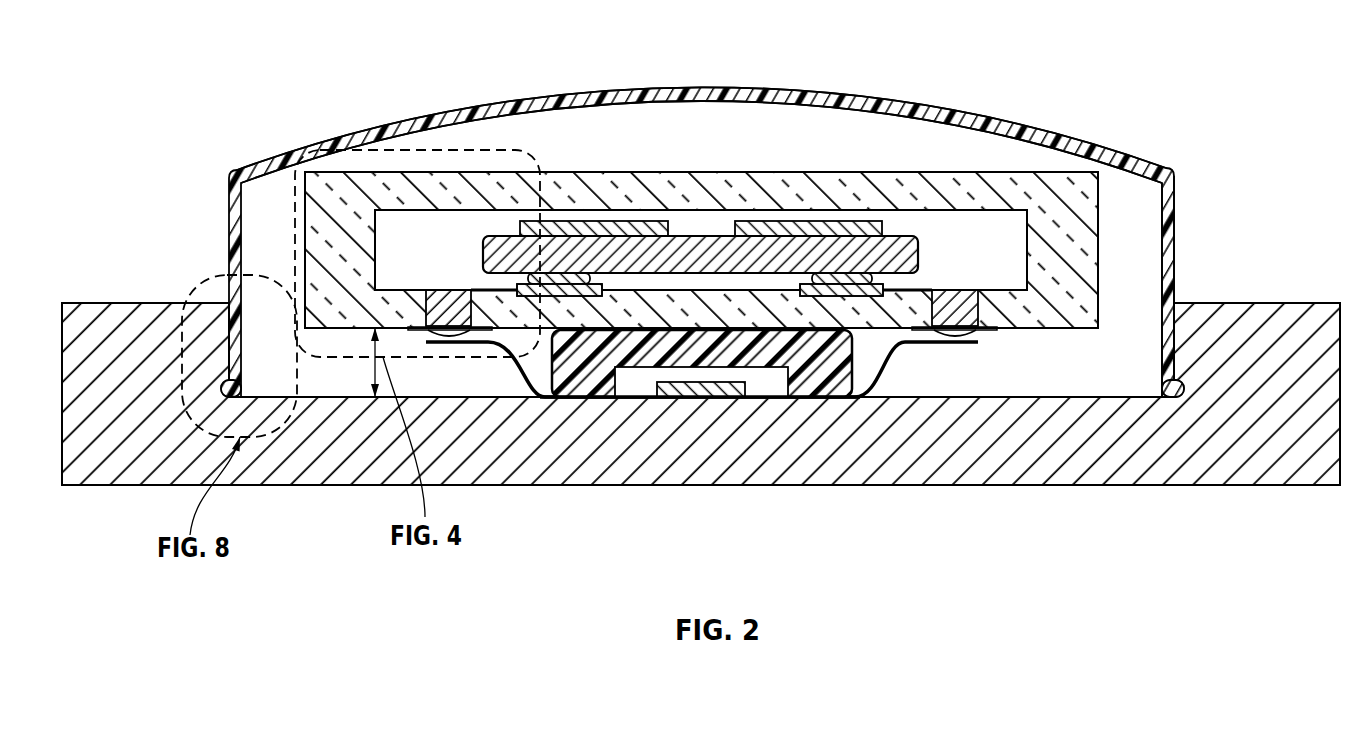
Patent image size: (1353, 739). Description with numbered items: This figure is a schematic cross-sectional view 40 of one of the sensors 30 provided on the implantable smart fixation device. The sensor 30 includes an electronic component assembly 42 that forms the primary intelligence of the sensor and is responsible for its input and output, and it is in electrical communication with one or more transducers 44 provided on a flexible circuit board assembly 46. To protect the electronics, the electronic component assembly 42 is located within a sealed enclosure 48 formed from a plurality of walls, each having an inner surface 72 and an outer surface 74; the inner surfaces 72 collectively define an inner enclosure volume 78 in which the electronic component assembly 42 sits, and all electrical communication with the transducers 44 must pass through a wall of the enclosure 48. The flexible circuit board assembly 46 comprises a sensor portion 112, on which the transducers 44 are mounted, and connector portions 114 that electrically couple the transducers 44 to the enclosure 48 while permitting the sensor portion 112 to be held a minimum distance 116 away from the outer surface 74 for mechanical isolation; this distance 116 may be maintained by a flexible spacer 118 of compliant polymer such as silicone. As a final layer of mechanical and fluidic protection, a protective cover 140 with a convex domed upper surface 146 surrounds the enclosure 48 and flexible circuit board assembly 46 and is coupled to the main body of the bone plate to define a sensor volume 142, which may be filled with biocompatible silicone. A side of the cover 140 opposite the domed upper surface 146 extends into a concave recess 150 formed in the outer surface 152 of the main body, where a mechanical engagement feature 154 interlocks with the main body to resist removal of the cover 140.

The sensor 30 is at (1157, 157).
The schematic cross-sectional view 40 is at (1148, 38).
The electronic component assembly 42 is at (1000, 245).
The transducers 44 is at (693, 327).
The flexible circuit board assembly 46 is at (888, 378).
The sealed enclosure 48 is at (735, 172).
The inner surface 72 is at (407, 210).
The outer surface 74 is at (303, 200).
The inner enclosure volume 78 is at (927, 255).
The sensor portion 112 is at (830, 405).
The connector portion 114 is at (512, 365).
The minimum distance 116 is at (375, 370).
The flexible spacer 118 is at (533, 397).
The protective cover 140 is at (387, 122).
The sensor volume 142 is at (598, 157).
The domed upper surface 146 is at (855, 98).
The concave recess 150 is at (1105, 347).
The outer surface 152 is at (1266, 303).
The mechanical engagement feature 154 is at (1185, 385).